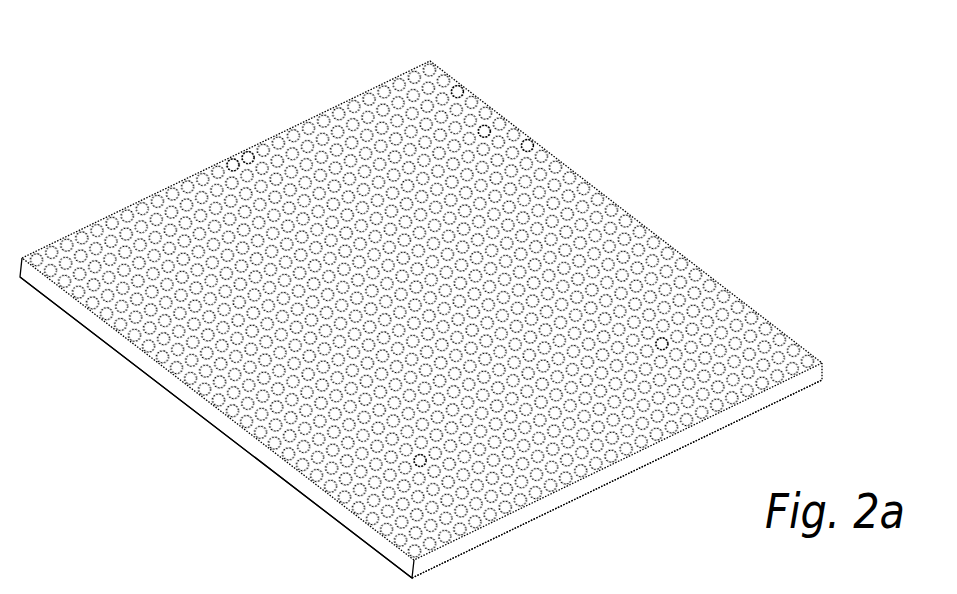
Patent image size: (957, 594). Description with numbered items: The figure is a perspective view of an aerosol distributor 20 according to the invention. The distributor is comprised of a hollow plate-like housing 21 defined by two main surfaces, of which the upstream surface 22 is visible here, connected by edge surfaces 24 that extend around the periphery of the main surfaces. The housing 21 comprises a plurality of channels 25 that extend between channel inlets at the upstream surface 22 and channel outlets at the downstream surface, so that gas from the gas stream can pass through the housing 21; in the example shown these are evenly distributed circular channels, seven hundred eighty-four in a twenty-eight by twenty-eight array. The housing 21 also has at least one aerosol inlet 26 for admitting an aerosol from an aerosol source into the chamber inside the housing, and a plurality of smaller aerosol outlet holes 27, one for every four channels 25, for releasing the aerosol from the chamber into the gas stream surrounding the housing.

The aerosol distributor 20 is at (421, 319).
The housing 21 is at (90, 338).
The upstream surface 22 is at (91, 243).
The edge surfaces 24 is at (212, 423).
The channels 25 is at (227, 165).
The aerosol inlet 26 is at (652, 340).
The aerosol outlet holes 27 is at (458, 98).